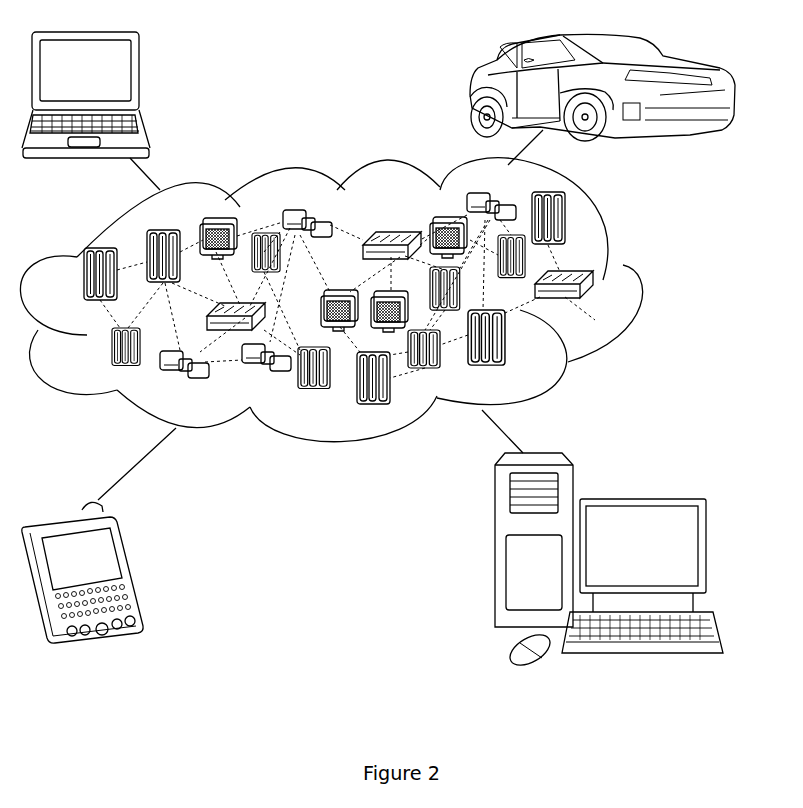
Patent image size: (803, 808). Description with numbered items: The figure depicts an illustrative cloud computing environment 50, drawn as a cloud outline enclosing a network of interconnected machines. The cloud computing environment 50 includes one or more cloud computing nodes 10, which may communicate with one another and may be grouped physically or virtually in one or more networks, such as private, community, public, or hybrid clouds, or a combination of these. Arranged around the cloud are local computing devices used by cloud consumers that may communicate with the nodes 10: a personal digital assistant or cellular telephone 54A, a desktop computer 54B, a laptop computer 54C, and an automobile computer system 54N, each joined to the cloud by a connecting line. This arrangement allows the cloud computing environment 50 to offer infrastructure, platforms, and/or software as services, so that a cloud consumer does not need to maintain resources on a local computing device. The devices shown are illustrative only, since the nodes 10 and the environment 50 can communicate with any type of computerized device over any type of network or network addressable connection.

The cloud computing node 10 is at (606, 311).
The cloud computing environment 50 is at (640, 283).
The personal digital assistant or cellular telephone 54A is at (130, 563).
The desktop computer 54B is at (640, 496).
The laptop computer 54C is at (140, 82).
The automobile computer system 54N is at (476, 90).